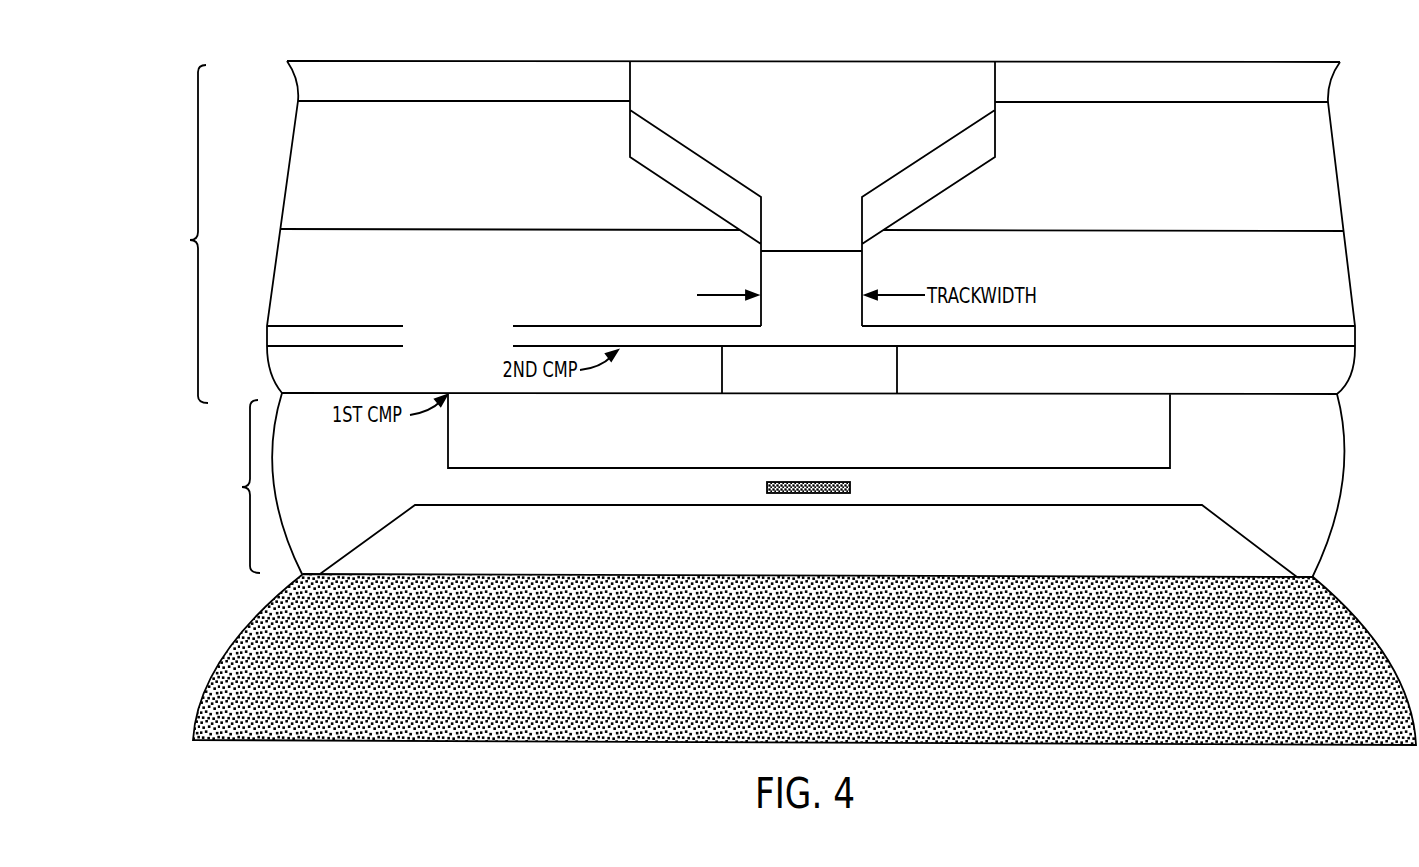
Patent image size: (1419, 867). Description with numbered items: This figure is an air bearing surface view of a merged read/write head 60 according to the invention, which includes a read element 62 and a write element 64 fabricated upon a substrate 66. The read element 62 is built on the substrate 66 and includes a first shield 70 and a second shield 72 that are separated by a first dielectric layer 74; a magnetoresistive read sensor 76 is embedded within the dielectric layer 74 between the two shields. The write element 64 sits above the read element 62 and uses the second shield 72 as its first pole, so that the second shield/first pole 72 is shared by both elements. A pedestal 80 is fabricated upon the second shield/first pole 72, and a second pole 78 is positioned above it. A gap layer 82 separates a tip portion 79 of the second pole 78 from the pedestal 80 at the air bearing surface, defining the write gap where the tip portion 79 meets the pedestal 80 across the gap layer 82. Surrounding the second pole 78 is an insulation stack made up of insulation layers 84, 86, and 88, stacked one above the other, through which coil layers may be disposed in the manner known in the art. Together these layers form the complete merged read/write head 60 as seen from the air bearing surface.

The merged read/write head 60 is at (244, 341).
The read element 62 is at (242, 487).
The write element 64 is at (190, 240).
The substrate 66 is at (1327, 613).
The first shield 70 is at (1235, 550).
The second shield 72 is at (1155, 442).
The first dielectric layer 74 is at (1330, 495).
The magnetoresistive read sensor 76 is at (813, 495).
The second pole 78 is at (808, 80).
The tip portion 79 is at (843, 273).
The pedestal 80 is at (882, 380).
The gap layer 82 is at (1213, 342).
The insulation layer 84 is at (1337, 278).
The insulation layer 86 is at (1322, 165).
The insulation layer 88 is at (1315, 80).